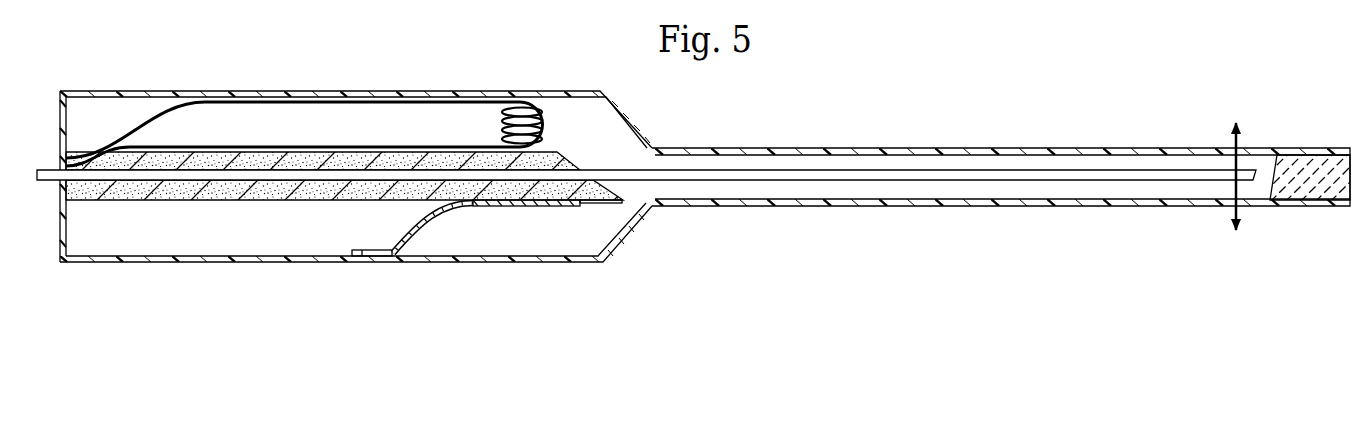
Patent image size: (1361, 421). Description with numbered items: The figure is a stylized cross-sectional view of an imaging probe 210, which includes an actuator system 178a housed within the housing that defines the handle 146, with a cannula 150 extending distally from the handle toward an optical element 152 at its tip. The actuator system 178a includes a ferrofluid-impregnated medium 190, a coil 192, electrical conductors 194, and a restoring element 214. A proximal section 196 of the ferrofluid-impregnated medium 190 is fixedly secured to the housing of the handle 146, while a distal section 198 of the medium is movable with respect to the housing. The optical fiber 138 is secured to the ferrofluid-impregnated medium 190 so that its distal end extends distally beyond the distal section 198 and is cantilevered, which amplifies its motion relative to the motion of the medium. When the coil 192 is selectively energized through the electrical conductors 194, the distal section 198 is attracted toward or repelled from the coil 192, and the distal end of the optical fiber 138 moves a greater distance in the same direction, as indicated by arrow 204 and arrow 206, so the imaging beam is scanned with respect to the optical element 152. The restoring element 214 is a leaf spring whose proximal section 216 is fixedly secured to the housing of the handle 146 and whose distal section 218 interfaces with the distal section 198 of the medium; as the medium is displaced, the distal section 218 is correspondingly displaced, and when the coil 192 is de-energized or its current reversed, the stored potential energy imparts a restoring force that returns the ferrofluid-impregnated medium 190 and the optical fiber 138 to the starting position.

The handle 146 is at (300, 92).
The imaging probe 210 is at (873, 104).
The cannula 150 is at (1015, 208).
The optical fiber 138 is at (1037, 169).
The optical element 152 is at (1312, 158).
The electrical conductors 194 is at (131, 122).
The coil 192 is at (502, 124).
The ferrofluid-impregnated medium 190 is at (268, 201).
The proximal section 196 is at (78, 210).
The distal section 198 is at (602, 213).
The arrow 204 is at (1232, 139).
The arrow 206 is at (1232, 213).
The restoring element 214 is at (432, 222).
The proximal section 216 is at (374, 251).
The distal section 218 is at (521, 206).
The actuator system 178a is at (303, 216).